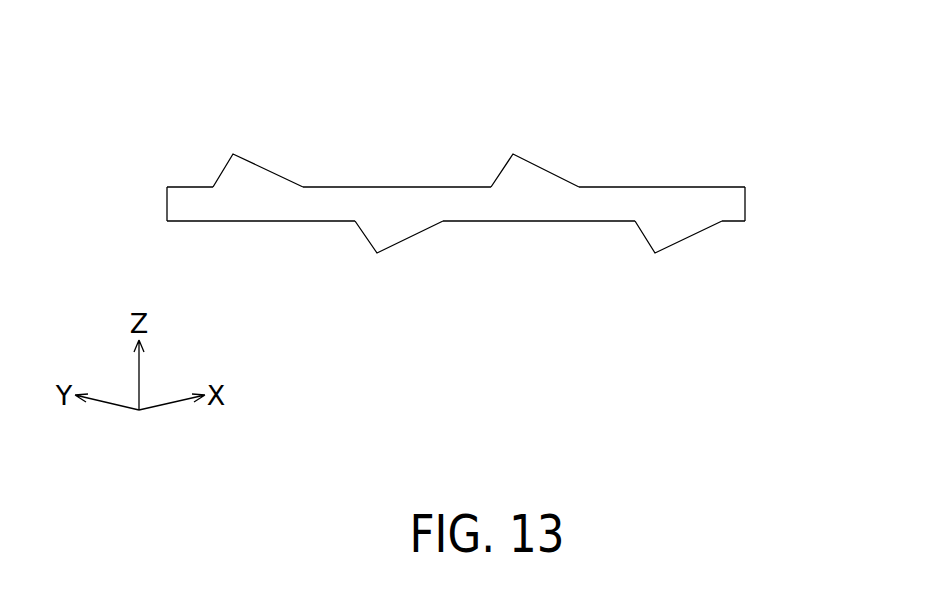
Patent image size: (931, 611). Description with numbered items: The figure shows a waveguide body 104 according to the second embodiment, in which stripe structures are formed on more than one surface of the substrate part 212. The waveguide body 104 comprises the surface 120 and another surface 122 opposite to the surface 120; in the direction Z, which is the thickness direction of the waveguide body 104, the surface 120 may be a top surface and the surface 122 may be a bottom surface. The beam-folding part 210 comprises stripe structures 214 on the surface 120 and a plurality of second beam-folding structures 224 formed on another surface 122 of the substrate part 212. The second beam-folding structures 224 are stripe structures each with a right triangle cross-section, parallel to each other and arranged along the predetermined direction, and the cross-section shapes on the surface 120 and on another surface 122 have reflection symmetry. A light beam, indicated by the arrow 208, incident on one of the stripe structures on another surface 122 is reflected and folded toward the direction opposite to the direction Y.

The waveguide body 104 is at (142, 188).
The surface 120 is at (700, 187).
The another surface 122 is at (556, 221).
The pressing direction 208 is at (708, 92).
The beam-folding part 210 is at (470, 163).
The substrate part 212 is at (202, 212).
The protrusion 214 is at (258, 175).
The second beam-folding structures 224 is at (392, 232).